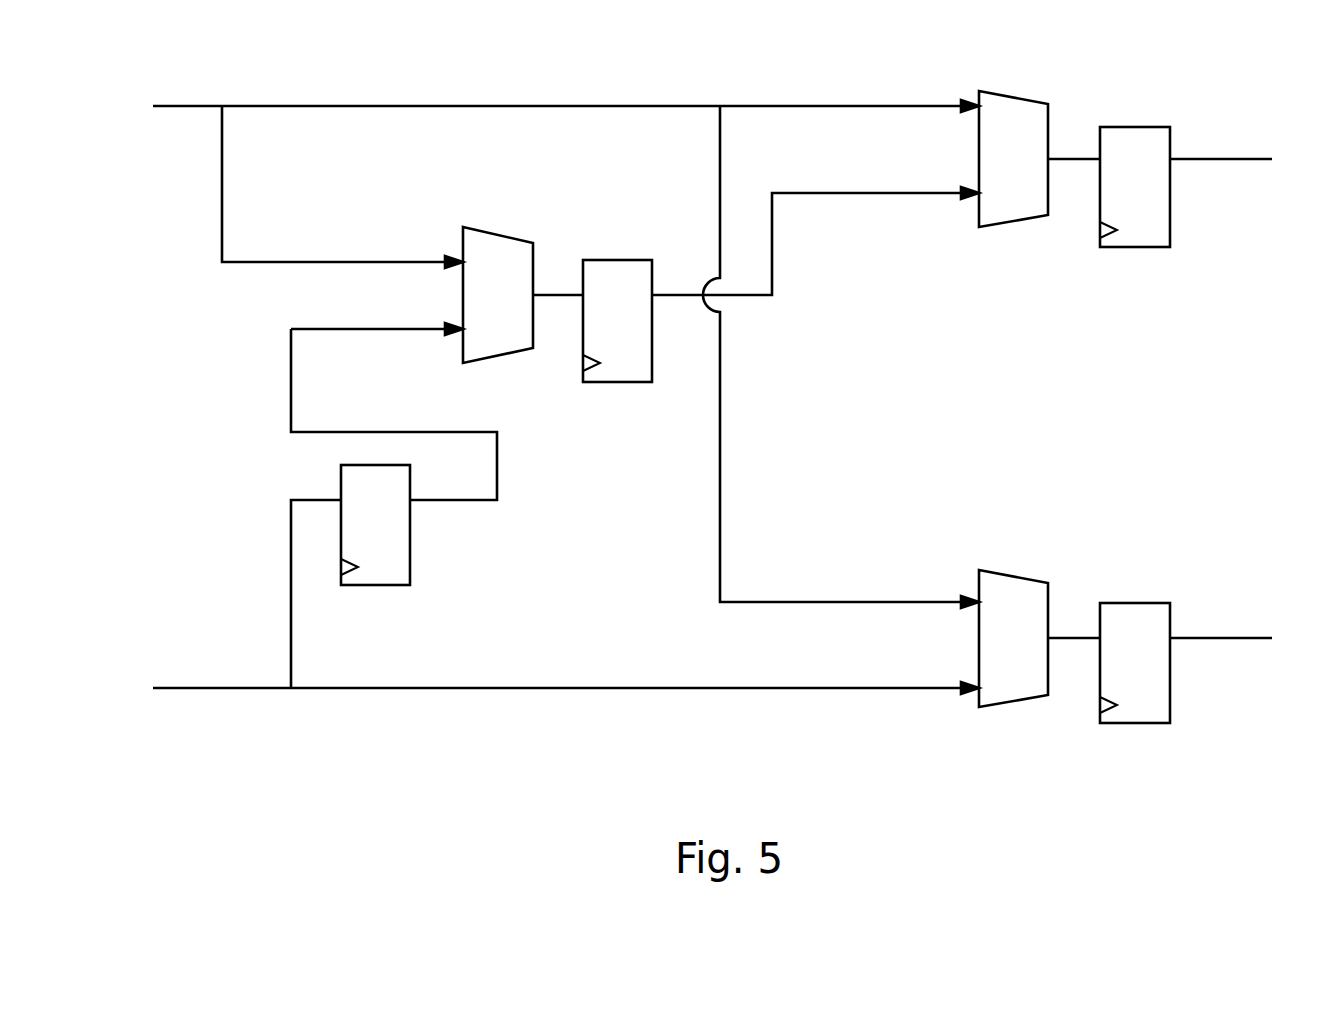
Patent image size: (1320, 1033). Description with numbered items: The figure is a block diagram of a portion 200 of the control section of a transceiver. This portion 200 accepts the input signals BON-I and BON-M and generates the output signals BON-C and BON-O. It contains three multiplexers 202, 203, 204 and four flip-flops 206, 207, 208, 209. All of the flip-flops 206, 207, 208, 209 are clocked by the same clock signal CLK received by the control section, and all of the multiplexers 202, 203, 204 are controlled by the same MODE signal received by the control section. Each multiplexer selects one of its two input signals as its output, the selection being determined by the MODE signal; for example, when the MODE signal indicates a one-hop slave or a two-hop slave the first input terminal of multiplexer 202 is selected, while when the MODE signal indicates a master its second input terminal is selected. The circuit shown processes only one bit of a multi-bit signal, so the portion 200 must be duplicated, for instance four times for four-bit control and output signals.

The portion of the control section 200 is at (1028, 433).
The multiplexer 202 is at (518, 241).
The multiplexer 203 is at (995, 227).
The multiplexer 204 is at (1018, 540).
The flip-flop 206 is at (612, 382).
The flip-flop 207 is at (388, 585).
The flip-flop 208 is at (1117, 247).
The flip-flop 209 is at (1117, 603).